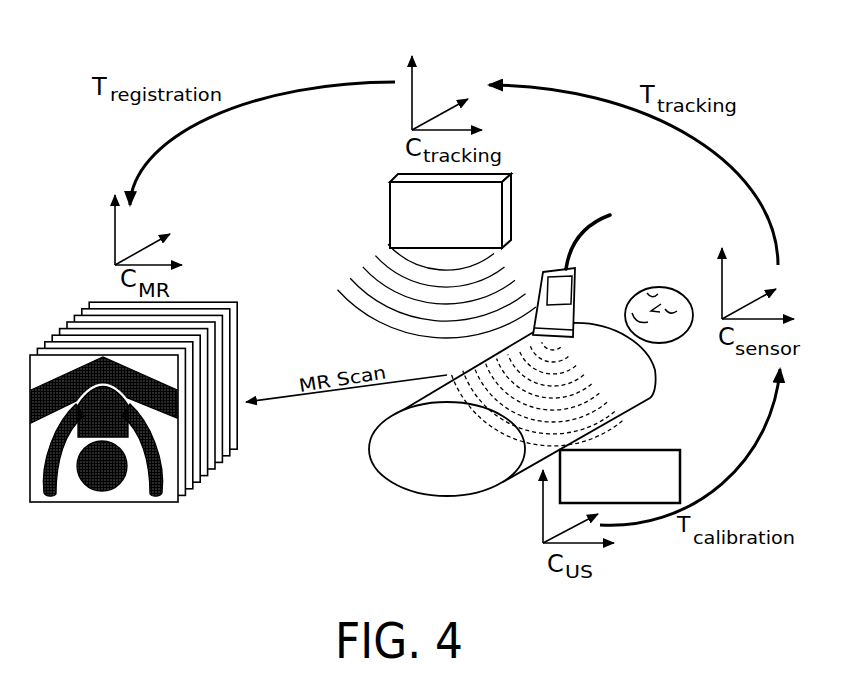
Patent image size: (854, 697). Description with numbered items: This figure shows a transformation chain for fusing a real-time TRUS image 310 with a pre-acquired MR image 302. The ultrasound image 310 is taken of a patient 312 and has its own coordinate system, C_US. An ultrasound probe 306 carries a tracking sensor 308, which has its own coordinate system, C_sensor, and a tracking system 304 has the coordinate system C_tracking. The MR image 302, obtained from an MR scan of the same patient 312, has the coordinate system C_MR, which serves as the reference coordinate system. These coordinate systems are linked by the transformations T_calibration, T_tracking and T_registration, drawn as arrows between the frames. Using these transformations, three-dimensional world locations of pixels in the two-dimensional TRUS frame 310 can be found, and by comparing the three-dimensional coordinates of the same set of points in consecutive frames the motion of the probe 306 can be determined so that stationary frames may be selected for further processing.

The MR image 302 is at (203, 473).
The tracking system 304 is at (512, 176).
The ultrasound probe 306 is at (552, 268).
The tracking sensor 308 is at (578, 284).
The TRUS image 310 is at (652, 449).
The patient 312 is at (449, 488).